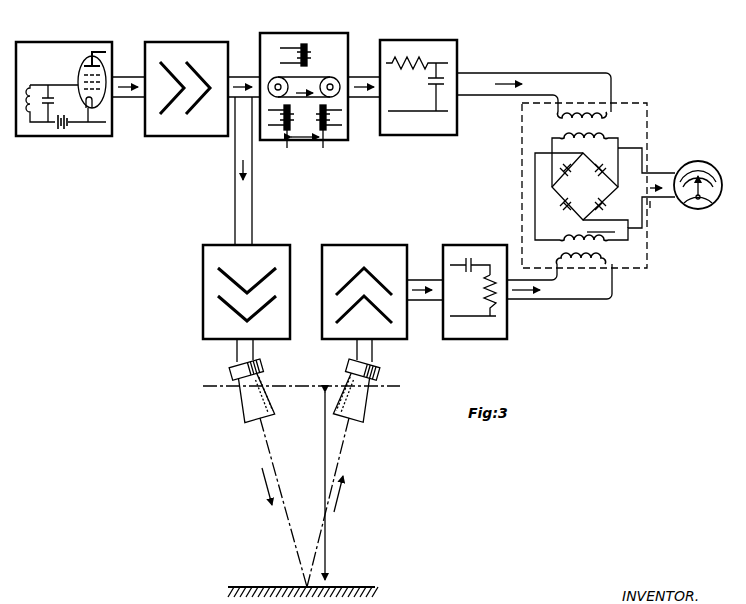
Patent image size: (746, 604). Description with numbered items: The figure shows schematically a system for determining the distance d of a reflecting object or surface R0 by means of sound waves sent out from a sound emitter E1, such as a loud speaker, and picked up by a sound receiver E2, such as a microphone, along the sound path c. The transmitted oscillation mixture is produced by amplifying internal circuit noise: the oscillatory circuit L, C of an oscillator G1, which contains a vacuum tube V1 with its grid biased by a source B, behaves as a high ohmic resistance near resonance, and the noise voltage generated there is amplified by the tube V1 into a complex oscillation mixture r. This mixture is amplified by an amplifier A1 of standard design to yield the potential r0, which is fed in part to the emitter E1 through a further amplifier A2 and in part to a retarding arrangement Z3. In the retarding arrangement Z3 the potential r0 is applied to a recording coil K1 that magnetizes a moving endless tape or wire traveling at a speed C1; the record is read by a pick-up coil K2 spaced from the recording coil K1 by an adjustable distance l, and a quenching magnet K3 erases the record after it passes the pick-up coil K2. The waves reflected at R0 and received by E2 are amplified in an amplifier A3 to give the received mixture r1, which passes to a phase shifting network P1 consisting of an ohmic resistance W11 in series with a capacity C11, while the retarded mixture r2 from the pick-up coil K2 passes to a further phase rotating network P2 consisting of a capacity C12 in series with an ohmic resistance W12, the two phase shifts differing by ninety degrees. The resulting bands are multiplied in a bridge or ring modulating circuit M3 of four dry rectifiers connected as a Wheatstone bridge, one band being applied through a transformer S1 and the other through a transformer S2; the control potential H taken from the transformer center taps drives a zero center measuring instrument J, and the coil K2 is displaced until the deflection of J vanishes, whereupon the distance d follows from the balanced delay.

The oscillator G1 is at (68, 43).
The vacuum tube V1 is at (78, 70).
The inductance of oscillatory circuit L is at (50, 94).
The capacity of oscillatory circuit C is at (52, 102).
The biasing source B is at (57, 129).
The amplifier A1 is at (168, 43).
The complex oscillation mixture r is at (126, 80).
The amplified complex wave r0 is at (243, 80).
The retarding arrangement Z3 is at (288, 34).
The quenching magnet K3 is at (308, 60).
The traveling speed of magnetic tape C1 is at (304, 87).
The recording magnet coil K1 is at (278, 117).
The pick-up coil K2 is at (332, 117).
The adjustable distance between coils l is at (305, 134).
The retarded oscillation mixture r2 is at (362, 80).
The phase rotating network P2 is at (406, 41).
The ohmic resistance of network P2 W12 is at (420, 56).
The capacity of network P2 C12 is at (418, 87).
The transformer S2 is at (524, 73).
The bridge or ring modulating circuit M3 is at (645, 133).
The zero center type measuring instrument J is at (682, 170).
The control potential H is at (658, 205).
The amplifier A2 is at (267, 246).
The amplifier A3 is at (356, 240).
The received oscillation mixture r1 is at (425, 304).
The phase shifting network P1 is at (460, 246).
The capacity of network P1 C11 is at (478, 262).
The ohmic resistance of network P1 W11 is at (480, 292).
The transformer S1 is at (546, 304).
The sound emitter E1 is at (232, 403).
The sound receiver E2 is at (372, 403).
The distance to reflecting object d is at (301, 483).
The sound path c is at (303, 502).
The reflecting object or surface R0 is at (303, 581).